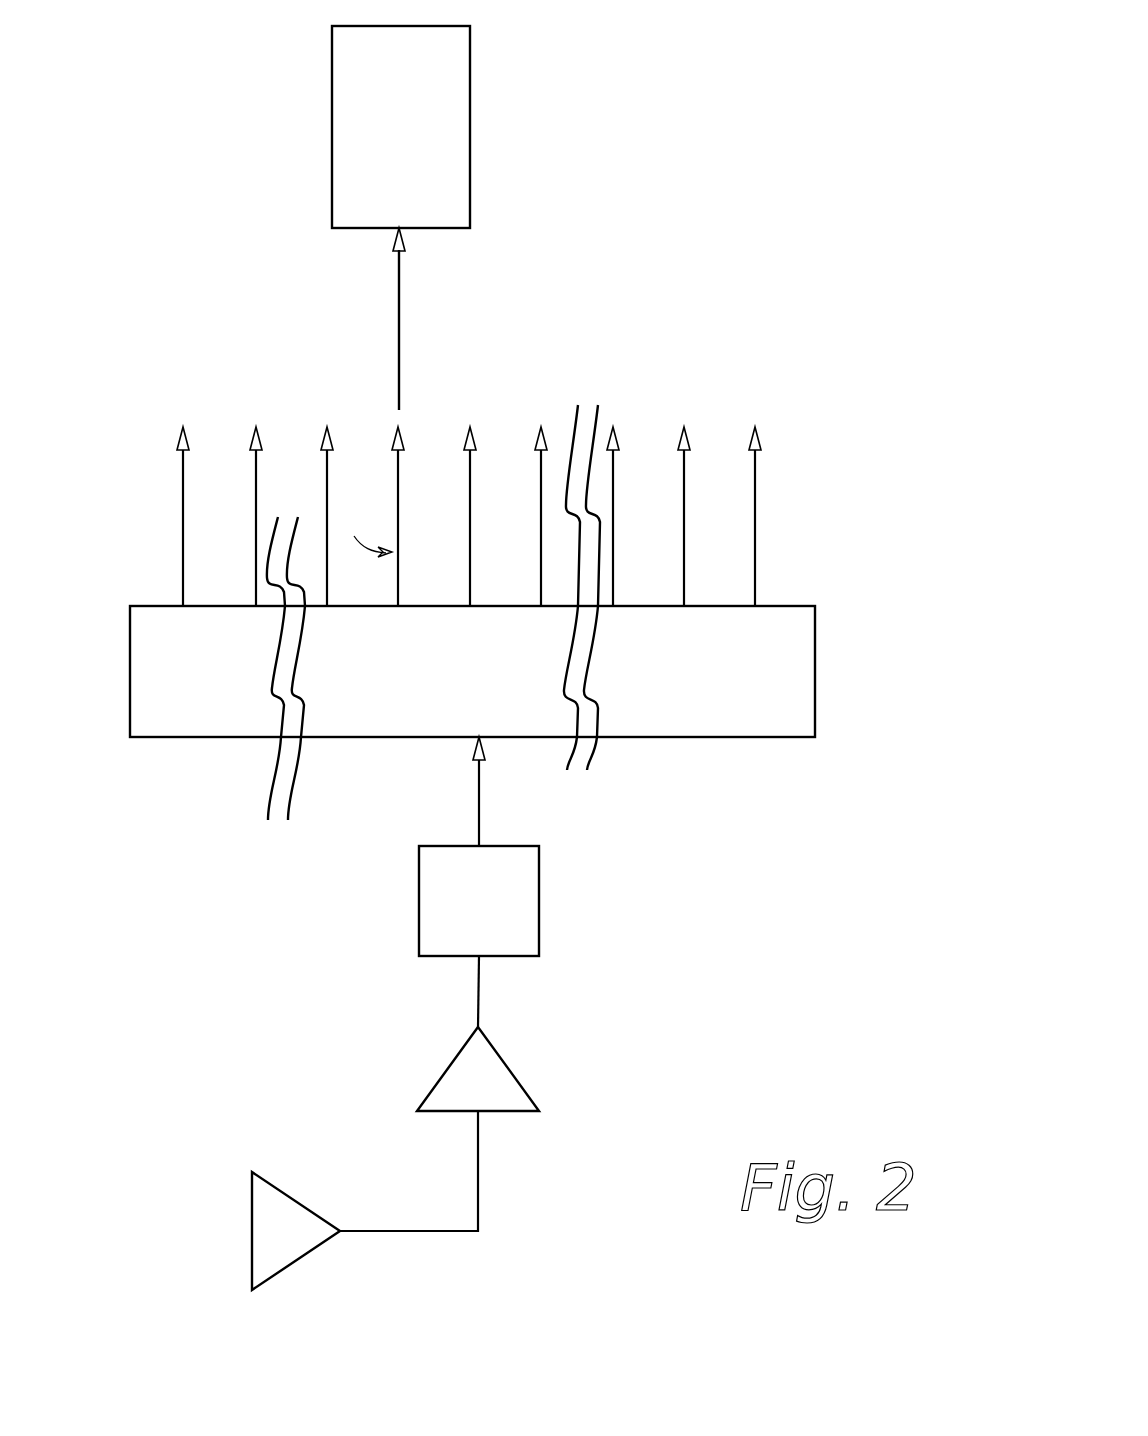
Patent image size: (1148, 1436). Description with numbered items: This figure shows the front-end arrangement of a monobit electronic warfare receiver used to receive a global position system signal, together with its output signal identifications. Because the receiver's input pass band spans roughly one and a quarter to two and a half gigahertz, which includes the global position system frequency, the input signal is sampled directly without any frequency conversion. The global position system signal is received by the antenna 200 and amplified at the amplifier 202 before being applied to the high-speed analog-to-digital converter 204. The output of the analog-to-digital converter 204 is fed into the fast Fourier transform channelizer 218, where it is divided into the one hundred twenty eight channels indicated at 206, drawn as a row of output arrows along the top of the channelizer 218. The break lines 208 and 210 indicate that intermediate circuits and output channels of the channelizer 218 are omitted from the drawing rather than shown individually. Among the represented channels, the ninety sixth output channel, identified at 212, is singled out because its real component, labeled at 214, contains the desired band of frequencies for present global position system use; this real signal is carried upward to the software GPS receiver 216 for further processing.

The antenna 200 is at (285, 1187).
The amplifier 202 is at (513, 1070).
The high-speed analog-to-digital converter 204 is at (541, 910).
The one hundred twenty eight channels 206 is at (798, 499).
The break lines 208 is at (280, 840).
The break lines 210 is at (582, 792).
The channel #96 output 212 is at (402, 477).
The real output signal 214 is at (326, 330).
The software GPS receiver 216 is at (473, 122).
The fast Fourier transform channelizer 218 is at (182, 740).